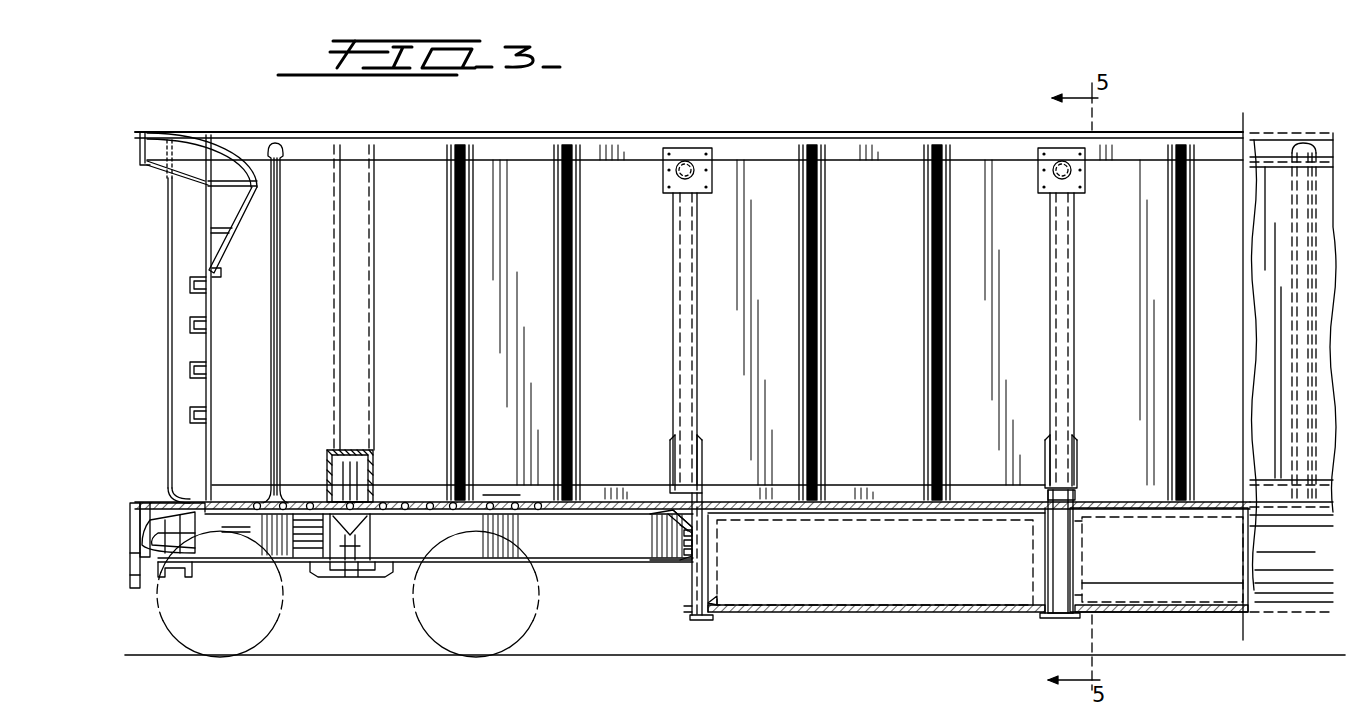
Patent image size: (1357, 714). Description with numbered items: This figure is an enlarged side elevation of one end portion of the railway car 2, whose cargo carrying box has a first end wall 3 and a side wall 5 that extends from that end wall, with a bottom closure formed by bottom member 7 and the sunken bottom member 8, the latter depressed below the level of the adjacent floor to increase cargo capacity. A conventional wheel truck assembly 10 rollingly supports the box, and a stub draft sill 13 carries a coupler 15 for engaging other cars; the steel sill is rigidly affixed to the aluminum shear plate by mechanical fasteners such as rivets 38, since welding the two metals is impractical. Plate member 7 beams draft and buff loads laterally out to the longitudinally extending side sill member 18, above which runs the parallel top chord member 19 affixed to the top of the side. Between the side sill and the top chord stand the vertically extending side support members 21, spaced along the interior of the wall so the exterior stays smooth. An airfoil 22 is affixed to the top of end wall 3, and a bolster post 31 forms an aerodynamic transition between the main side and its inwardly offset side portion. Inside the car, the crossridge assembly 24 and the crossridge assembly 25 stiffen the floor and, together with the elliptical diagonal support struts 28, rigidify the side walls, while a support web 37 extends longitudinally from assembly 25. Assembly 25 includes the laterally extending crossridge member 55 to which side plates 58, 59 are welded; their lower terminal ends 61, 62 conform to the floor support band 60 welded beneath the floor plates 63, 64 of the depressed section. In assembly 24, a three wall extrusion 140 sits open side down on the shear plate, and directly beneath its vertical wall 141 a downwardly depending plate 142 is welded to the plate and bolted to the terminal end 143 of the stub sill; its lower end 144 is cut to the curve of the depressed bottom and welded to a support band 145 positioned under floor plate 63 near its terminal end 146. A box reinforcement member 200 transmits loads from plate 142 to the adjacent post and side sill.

The car 2 is at (925, 122).
The first end wall 3 is at (197, 306).
The side wall 5 is at (748, 187).
The bottom member 7 is at (608, 490).
The bottom member 8 is at (897, 605).
The wheel truck assembly 10 is at (565, 610).
The stub draft sill 13 is at (569, 545).
The coupler 15 is at (170, 530).
The side sill member 18 is at (505, 492).
The top chord member 19 is at (485, 150).
The side support member 21 is at (560, 190).
The airfoil 22 is at (204, 132).
The crossridge assembly 24 is at (667, 507).
The crossridge assembly 25 is at (1047, 555).
The diagonal support strut 28 is at (680, 233).
The bolster post 31 is at (353, 163).
The support web 37 is at (1157, 580).
The rivets 38 is at (427, 500).
The crossridge member 55 is at (1070, 487).
The side plate 58 is at (1040, 542).
The side plate 59 is at (1080, 528).
The floor support band 60 is at (1063, 620).
The lower terminal end 61 is at (1182, 558).
The lower terminal end 62 is at (1220, 577).
The floor plate 63 is at (933, 603).
The floor plate 64 is at (1172, 608).
The three wall extrusion 140 is at (687, 488).
The vertical wall 141 is at (653, 503).
The downwardly depending plate 142 is at (703, 547).
The terminal end of stub center sill 143 is at (690, 557).
The lower end of plate 144 is at (693, 613).
The support band 145 is at (698, 617).
The terminal end of floor plate 146 is at (713, 605).
The box reinforcement member 200 is at (672, 507).